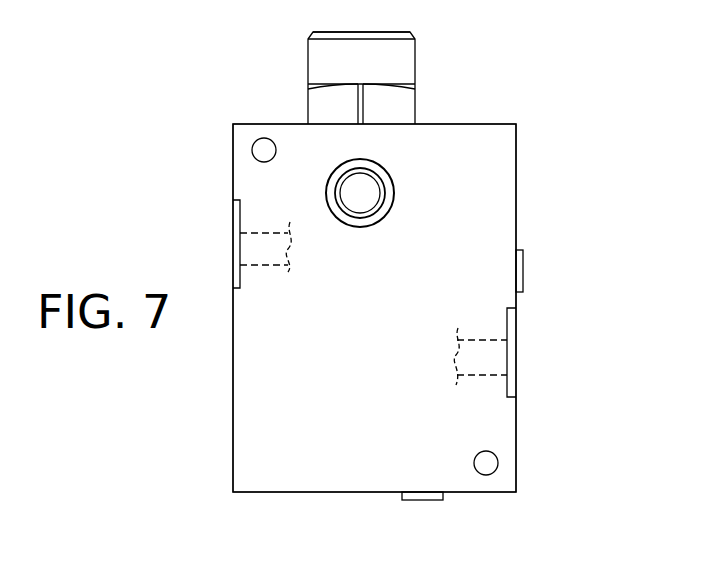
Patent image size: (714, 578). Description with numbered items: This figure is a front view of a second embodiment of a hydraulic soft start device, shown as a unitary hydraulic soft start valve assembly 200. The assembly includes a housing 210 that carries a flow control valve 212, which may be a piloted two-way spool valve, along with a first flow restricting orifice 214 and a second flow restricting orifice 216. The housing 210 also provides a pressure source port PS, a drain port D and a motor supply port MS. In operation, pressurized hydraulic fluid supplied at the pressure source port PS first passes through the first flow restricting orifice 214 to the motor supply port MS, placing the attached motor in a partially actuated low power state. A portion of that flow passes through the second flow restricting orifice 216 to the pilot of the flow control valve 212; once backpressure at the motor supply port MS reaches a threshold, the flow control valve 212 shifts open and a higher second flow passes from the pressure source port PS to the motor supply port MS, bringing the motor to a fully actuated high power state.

The unitary hydraulic soft start valve assembly 200 is at (86, 173).
The housing 210 is at (498, 162).
The flow control valve 212 is at (402, 52).
The first flow restricting orifice 214 is at (518, 267).
The second flow restricting orifice 216 is at (420, 493).
The drain port D is at (367, 193).
The pressure source port PS is at (226, 242).
The motor supply port MS is at (524, 357).